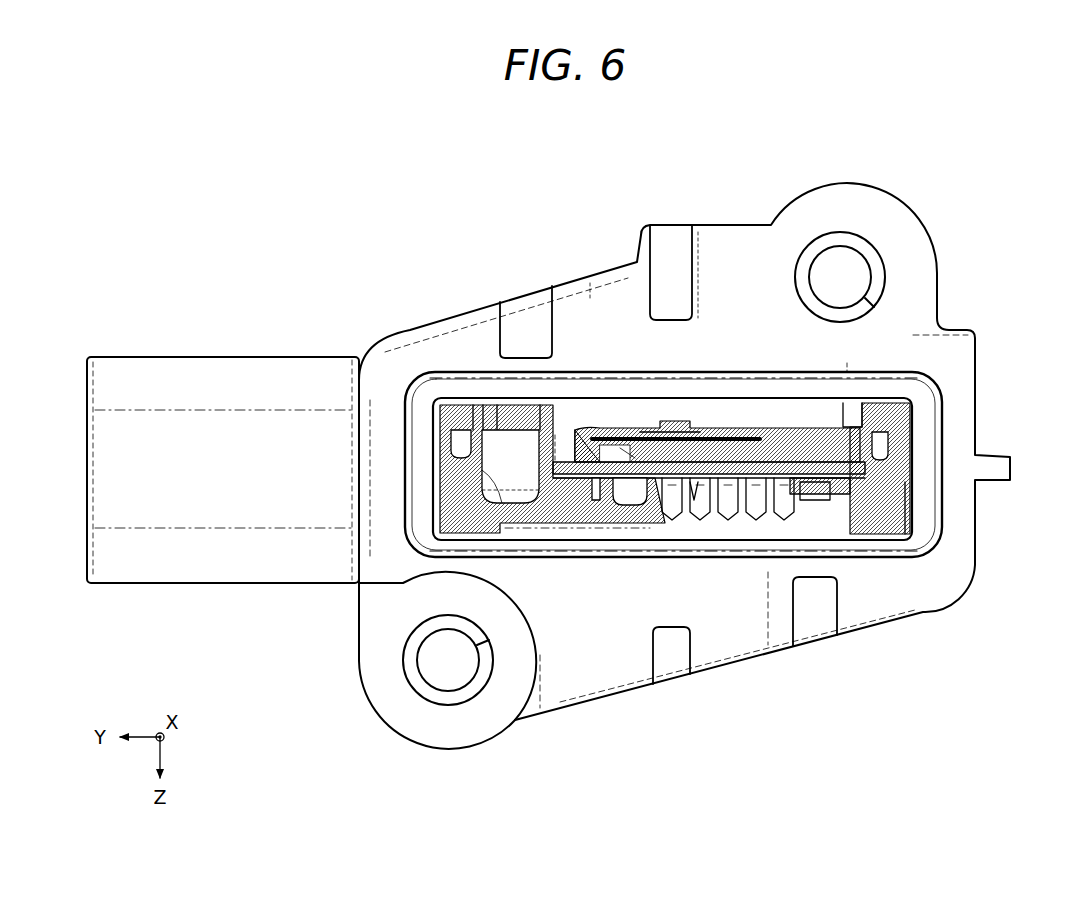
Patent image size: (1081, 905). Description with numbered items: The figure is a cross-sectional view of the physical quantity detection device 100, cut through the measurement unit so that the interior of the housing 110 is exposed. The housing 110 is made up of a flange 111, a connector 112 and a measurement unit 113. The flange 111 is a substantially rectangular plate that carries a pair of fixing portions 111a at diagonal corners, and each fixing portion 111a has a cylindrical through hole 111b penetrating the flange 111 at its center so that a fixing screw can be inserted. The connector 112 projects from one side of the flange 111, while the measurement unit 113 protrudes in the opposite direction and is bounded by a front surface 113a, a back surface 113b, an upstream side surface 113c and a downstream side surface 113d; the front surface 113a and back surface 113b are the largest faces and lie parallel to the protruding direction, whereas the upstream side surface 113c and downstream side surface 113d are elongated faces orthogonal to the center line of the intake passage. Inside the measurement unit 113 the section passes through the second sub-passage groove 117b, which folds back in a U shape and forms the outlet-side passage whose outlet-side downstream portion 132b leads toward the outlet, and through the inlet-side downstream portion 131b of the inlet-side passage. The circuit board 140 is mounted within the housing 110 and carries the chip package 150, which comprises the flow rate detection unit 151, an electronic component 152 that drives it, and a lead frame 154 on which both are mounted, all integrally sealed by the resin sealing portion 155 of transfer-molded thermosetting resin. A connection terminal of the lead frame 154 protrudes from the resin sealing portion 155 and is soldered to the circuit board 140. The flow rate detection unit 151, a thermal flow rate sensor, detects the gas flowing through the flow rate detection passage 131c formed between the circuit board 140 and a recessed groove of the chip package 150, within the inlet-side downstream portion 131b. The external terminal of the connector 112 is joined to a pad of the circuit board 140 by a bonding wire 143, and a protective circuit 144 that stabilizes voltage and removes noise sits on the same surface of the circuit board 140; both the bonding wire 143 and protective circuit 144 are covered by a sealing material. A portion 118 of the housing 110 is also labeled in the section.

The physical quantity detection device 100 is at (226, 206).
The housing 110 is at (880, 400).
The flange 111 is at (577, 275).
The fixing portions 111a is at (872, 185).
The through hole 111b is at (848, 276).
The connector 112 is at (204, 357).
The measurement unit 113 is at (445, 420).
The front surface 113a is at (878, 540).
The back surface 113b is at (510, 448).
The upstream side surface 113c is at (907, 440).
The downstream side surface 113d is at (452, 458).
The second sub-passage groove 117b is at (495, 480).
The engagement portion 118 is at (847, 440).
The inlet-side downstream portion 131b is at (632, 460).
The flow rate detection passage 131c is at (605, 452).
The outlet-side downstream portion 132b is at (548, 445).
The circuit board 140 is at (860, 465).
The bonding wire 143 is at (700, 500).
The protective circuit 144 is at (752, 500).
The chip package 150 is at (637, 425).
The flow rate detection unit 151 is at (614, 528).
The electronic component 152 is at (680, 482).
The lead frame 154 is at (745, 465).
The resin sealing portion 155 is at (695, 432).